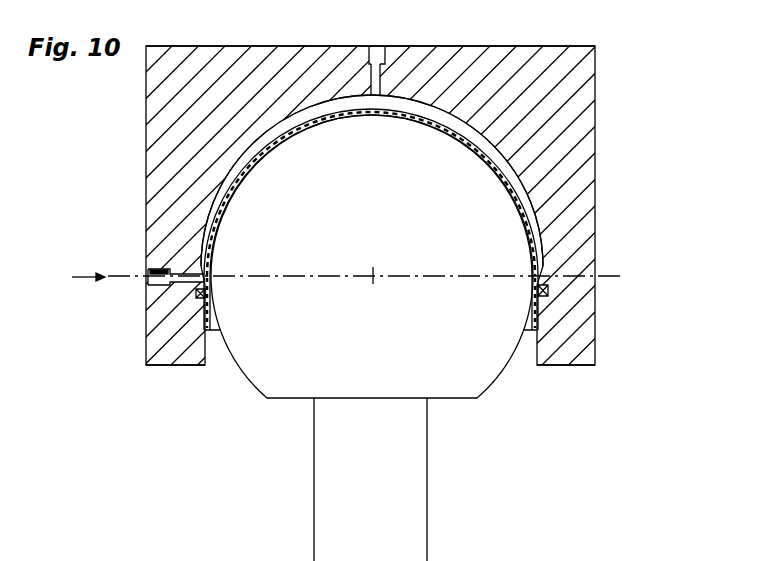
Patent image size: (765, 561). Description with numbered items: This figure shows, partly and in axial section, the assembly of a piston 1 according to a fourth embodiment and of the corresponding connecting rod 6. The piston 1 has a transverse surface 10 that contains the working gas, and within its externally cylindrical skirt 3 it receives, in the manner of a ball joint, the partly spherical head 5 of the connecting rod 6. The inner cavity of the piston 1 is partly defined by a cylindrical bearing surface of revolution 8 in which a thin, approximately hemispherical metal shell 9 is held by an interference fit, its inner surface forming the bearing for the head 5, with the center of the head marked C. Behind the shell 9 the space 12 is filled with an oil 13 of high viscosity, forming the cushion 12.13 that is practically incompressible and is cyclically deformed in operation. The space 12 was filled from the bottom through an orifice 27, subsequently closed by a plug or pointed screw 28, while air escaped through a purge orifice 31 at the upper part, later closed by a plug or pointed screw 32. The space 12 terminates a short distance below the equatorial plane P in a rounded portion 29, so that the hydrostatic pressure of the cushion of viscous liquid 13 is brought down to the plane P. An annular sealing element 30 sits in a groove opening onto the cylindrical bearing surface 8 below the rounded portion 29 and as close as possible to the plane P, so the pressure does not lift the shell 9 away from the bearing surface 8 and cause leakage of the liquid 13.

The piston 1 is at (597, 63).
The externally cylindrical skirt 3 is at (576, 366).
The partly spherical head 5 is at (397, 231).
The connecting rod 6 is at (410, 490).
The cylindrical bearing surface of revolution 8 is at (213, 346).
The thin metal shell 9 is at (527, 200).
The transverse surface 10 is at (252, 46).
The space filled with viscous oil 12.13 is at (439, 205).
The space 12 is at (371, 219).
The oil of high viscosity 13 is at (500, 139).
The orifice 27 is at (160, 268).
The plug or pointed screw 28 is at (148, 270).
The rounded portion 29 is at (195, 296).
The annular sealing element 30 is at (549, 291).
The purge orifice 31 is at (381, 87).
The plug or pointed screw 32 is at (372, 60).
The center C is at (374, 278).
The equatorial plane P is at (355, 264).